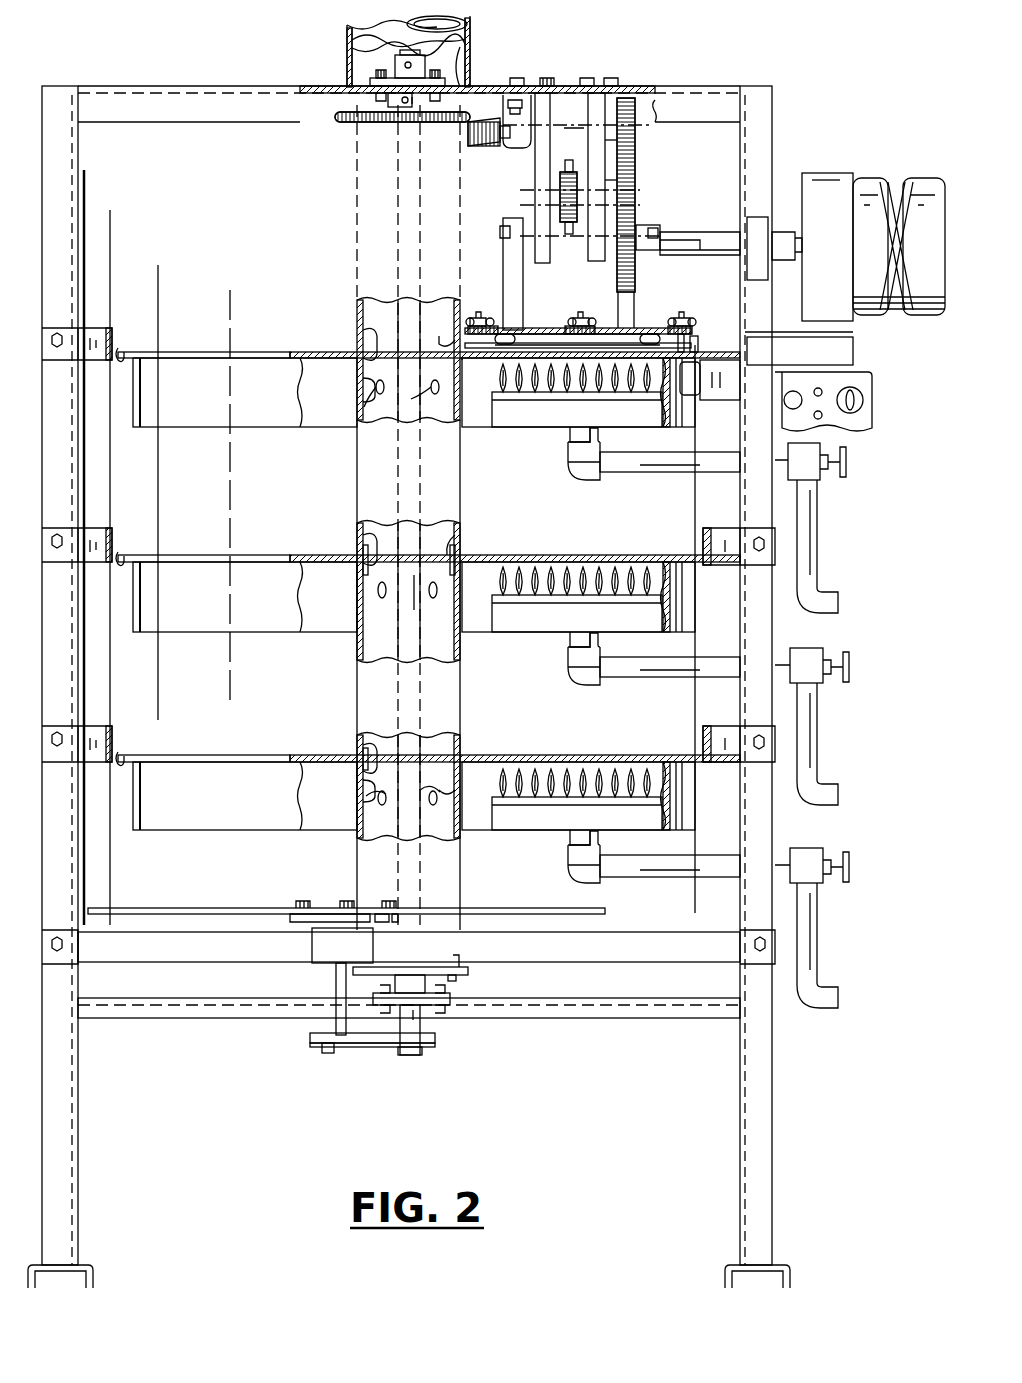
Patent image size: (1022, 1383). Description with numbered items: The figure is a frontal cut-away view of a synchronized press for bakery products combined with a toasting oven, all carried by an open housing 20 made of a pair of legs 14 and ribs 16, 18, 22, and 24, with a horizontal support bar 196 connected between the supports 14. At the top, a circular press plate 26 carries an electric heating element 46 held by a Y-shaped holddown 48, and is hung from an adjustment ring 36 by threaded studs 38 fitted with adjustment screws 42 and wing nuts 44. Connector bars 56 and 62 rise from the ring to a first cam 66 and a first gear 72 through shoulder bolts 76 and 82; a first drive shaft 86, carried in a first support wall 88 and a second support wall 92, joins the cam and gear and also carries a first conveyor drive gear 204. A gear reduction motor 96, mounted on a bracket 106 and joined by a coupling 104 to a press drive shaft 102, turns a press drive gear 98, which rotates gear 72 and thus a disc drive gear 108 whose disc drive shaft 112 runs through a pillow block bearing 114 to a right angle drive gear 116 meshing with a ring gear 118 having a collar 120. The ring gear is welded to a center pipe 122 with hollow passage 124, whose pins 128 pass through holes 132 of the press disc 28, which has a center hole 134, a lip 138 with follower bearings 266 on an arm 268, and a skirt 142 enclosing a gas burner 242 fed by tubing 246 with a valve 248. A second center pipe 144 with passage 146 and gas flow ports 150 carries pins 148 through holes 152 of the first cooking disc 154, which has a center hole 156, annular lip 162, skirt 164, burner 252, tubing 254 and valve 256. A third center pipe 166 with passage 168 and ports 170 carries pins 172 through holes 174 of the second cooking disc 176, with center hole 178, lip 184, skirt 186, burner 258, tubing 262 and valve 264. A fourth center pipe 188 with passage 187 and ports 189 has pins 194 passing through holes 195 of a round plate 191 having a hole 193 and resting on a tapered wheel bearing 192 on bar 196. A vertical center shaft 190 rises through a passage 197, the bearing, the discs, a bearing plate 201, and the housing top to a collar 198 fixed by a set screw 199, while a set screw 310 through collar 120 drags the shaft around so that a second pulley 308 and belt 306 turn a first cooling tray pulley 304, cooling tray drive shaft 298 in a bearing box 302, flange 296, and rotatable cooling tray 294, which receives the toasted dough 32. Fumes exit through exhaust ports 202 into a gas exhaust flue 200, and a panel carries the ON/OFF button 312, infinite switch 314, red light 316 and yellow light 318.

The supports or legs 14 is at (78, 1130).
The open housing 20 is at (807, 88).
The rib 24 is at (408, 947).
The horizontal support bar 196 is at (165, 1019).
The rib 16 is at (98, 328).
The rib 18 is at (98, 528).
The rib 22 is at (100, 730).
The lip 138 is at (121, 350).
The annular lip 162 is at (121, 553).
The annular lip 184 is at (121, 753).
The press disc 28 is at (255, 352).
The first cooking disc 154 is at (200, 555).
The second cooking disc 176 is at (250, 755).
The skirt 142 is at (245, 392).
The skirt 164 is at (245, 597).
The skirt 186 is at (245, 796).
The center pipe 122 is at (357, 250).
The hollow passage 124 is at (370, 328).
The pins 128 is at (365, 339).
The holes 132 is at (363, 388).
The hole 134 is at (428, 350).
The gas flow ports 150 is at (380, 395).
The second center pipe 144 is at (357, 463).
The hollow passage 146 is at (432, 528).
The hole 156 is at (393, 550).
The pins 148 is at (363, 540).
The holes 152 is at (455, 540).
The gas flow ports 170 is at (378, 590).
The hollow passage 168 is at (385, 644).
The third center pipe 166 is at (357, 679).
The hole 178 is at (395, 754).
The holes 174 is at (367, 740).
The pins 172 is at (363, 790).
The gas flow ports 189 is at (380, 800).
The hollow passage 187 is at (455, 800).
The fourth center pipe 188 is at (357, 862).
The gas exhaust flue 200 is at (353, 34).
The set screw 199 is at (408, 64).
The collar 198 is at (395, 64).
The bearing plate 201 is at (370, 82).
The gas exhaust ports 202 is at (465, 85).
The collar 120 is at (388, 101).
The ring gear 118 is at (341, 118).
The set screw 310 is at (398, 107).
The right angle drive gear 116 is at (478, 144).
The pillow block bearing 114 is at (506, 110).
The first support wall 88 is at (547, 78).
The disc drive shaft 112 is at (562, 125).
The second support wall 92 is at (602, 105).
The disc drive gear 108 is at (636, 133).
The first gear 72 is at (636, 170).
The first drive shaft 86 is at (590, 190).
The first cam 66 is at (520, 190).
The shoulder bolt 76 is at (500, 230).
The connector bar 56 is at (510, 250).
The first conveyor drive gear 204 is at (570, 222).
The shoulder bolt 82 is at (652, 228).
The press drive shaft 102 is at (665, 240).
The coupling 104 is at (710, 235).
The press drive gear 98 is at (616, 272).
The connector bar 62 is at (648, 275).
The electric heating element 46 is at (614, 332).
The Y-shaped holddown 48 is at (620, 328).
The circular press plate 26 is at (548, 336).
The adjustment ring 36 is at (535, 326).
The wing nut 44 is at (480, 318).
The threaded studs 38 is at (678, 320).
The adjustment screw 42 is at (698, 345).
The ball of dough 32 is at (493, 365).
The gas burner 242 is at (578, 392).
The gas tubing 246 is at (655, 472).
The gas burner 252 is at (578, 597).
The tubing 254 is at (652, 677).
The gas burner 258 is at (578, 796).
The gas tubing 262 is at (655, 877).
The follower bearings 266 is at (702, 396).
The gear reduction motor 96 is at (916, 178).
The bracket 106 is at (855, 352).
The arm 268 is at (750, 355).
The ON/OFF button 312 is at (840, 376).
The red light 316 is at (823, 390).
The infinite switch 314 is at (863, 405).
The yellow light 318 is at (822, 418).
The valve 248 is at (846, 462).
The valve 256 is at (849, 667).
The valve 264 is at (849, 867).
The rotatable cooling tray 294 is at (148, 908).
The flange 296 is at (290, 922).
The bearing box 302 is at (342, 945).
The cooling tray drive shaft 298 is at (336, 975).
The round plate 191 is at (468, 970).
The hole 193 is at (433, 967).
The holes 195 is at (456, 978).
The tapered wheel bearing 192 is at (395, 980).
The pins 194 is at (456, 1000).
The vertical center shaft 190 is at (410, 1056).
The passage 197 is at (420, 1003).
The first cooling tray pulley 304 is at (316, 1045).
The pulley drive belt 306 is at (380, 1047).
The second pulley 308 is at (428, 1055).